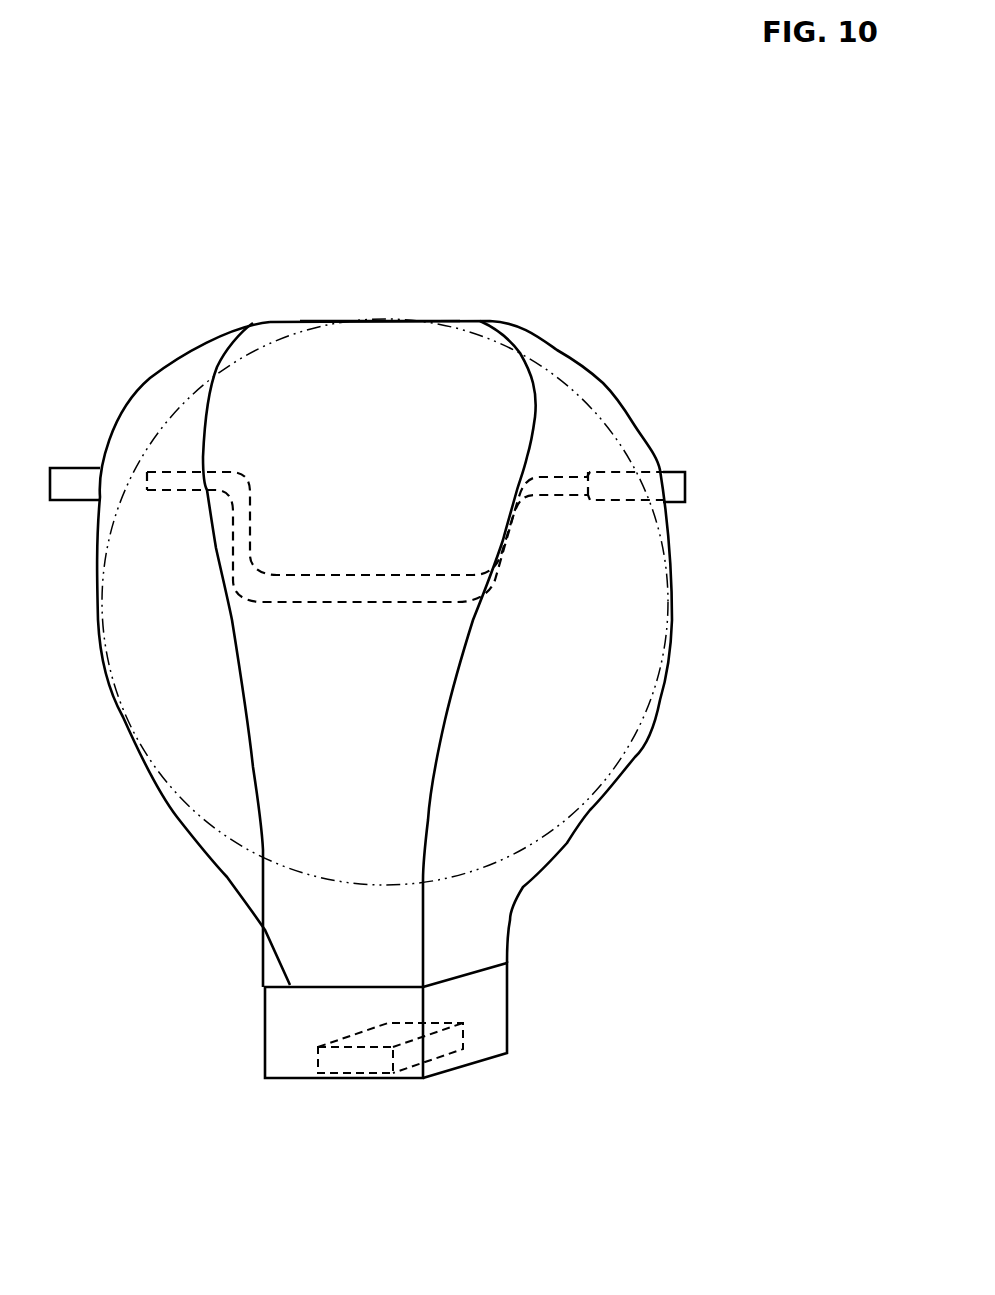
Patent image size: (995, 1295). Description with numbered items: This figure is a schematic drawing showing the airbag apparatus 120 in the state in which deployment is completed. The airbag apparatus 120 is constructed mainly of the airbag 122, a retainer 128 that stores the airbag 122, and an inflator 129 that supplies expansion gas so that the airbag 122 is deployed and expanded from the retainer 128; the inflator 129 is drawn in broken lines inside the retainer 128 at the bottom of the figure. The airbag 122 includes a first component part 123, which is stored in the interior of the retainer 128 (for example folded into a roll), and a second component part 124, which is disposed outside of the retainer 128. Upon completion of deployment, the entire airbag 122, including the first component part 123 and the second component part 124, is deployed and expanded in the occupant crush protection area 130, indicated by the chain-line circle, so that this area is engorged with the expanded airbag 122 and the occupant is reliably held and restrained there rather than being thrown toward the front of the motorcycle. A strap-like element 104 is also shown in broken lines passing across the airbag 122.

The strap / band 104 is at (567, 477).
The airbag apparatus 120 is at (506, 688).
The airbag 122 is at (638, 758).
The first component part 123 is at (567, 843).
The second component part 124 is at (398, 350).
The retainer 128 is at (512, 1005).
The inflator 129 is at (447, 1047).
The occupant crush protection area 130 is at (180, 817).